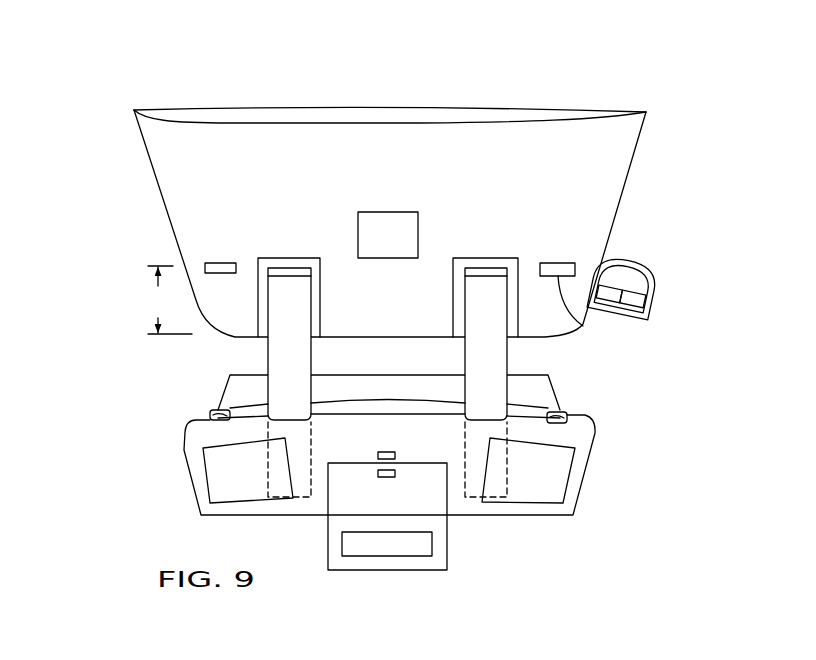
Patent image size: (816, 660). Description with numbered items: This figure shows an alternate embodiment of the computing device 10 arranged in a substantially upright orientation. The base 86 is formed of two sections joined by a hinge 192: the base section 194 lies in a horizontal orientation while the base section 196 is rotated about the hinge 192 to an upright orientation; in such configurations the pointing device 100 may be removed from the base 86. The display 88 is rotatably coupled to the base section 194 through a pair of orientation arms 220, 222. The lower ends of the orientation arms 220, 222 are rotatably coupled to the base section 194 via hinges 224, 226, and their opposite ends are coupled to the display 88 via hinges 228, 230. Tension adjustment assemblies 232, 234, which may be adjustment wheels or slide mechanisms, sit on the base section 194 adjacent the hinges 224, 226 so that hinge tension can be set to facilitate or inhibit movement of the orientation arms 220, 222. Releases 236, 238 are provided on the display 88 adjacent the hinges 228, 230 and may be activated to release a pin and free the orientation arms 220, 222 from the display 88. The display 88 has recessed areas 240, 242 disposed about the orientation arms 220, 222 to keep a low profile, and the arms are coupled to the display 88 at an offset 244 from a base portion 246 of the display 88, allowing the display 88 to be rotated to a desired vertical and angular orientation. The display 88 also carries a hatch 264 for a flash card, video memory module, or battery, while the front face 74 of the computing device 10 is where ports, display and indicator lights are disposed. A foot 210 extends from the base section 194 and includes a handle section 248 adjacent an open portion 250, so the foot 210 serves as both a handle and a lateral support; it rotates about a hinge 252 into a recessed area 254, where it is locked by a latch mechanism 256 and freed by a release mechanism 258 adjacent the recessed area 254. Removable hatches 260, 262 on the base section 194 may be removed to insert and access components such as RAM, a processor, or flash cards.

The computing device 10 is at (692, 140).
The display 88 is at (637, 163).
The pointing device 100 is at (660, 298).
The hatch 264 is at (385, 212).
The release 236 is at (210, 262).
The offset 244 is at (166, 300).
The front face 74 is at (248, 372).
The recessed area 240 is at (288, 257).
The recessed area 242 is at (488, 256).
The hinge 228 is at (268, 272).
The hinge 230 is at (517, 270).
The release 238 is at (583, 326).
The orientation arm 220 is at (278, 385).
The orientation arm 222 is at (493, 392).
The base portion 246 is at (357, 338).
The base 86 is at (155, 450).
The hinge 224 is at (311, 408).
The hinge 226 is at (465, 408).
The tension adjustment assembly 232 is at (210, 414).
The tension adjustment assembly 234 is at (563, 407).
The base section 196 is at (212, 408).
The removable hatch 260 is at (212, 490).
The removable hatch 262 is at (570, 477).
The hinge 192 is at (201, 516).
The base section 194 is at (587, 498).
The release mechanism 258 is at (378, 456).
The hinge 252 is at (449, 520).
The latch mechanism 256 is at (386, 478).
The handle section 248 is at (370, 563).
The recessed area 254 is at (328, 490).
The open portion 250 is at (433, 543).
The foot 210 is at (415, 572).